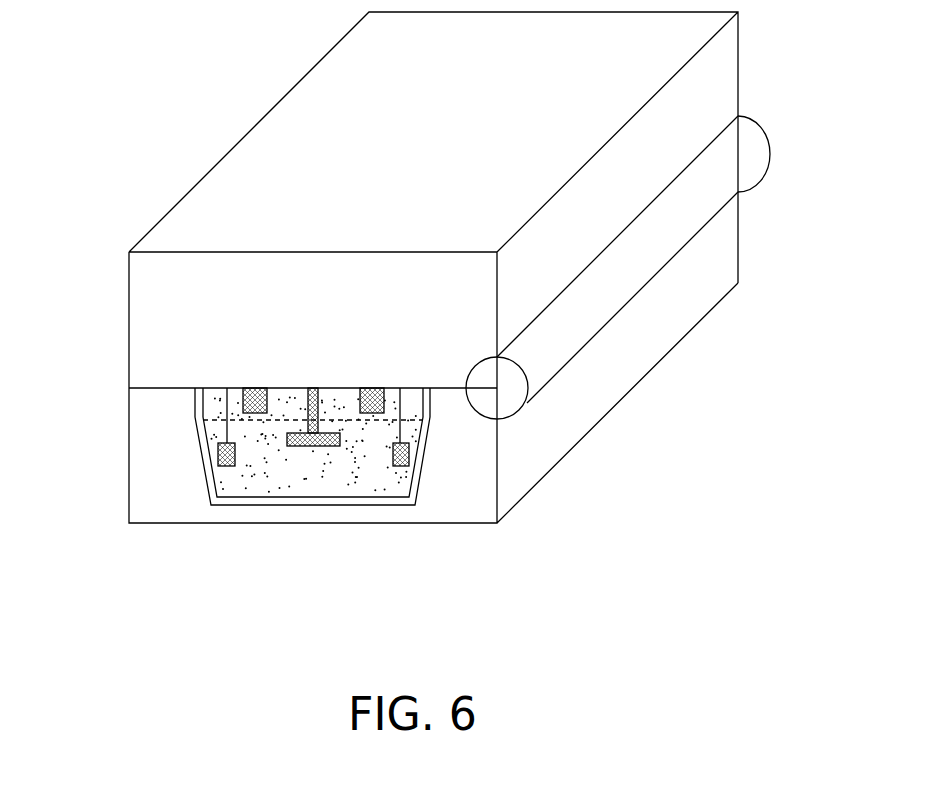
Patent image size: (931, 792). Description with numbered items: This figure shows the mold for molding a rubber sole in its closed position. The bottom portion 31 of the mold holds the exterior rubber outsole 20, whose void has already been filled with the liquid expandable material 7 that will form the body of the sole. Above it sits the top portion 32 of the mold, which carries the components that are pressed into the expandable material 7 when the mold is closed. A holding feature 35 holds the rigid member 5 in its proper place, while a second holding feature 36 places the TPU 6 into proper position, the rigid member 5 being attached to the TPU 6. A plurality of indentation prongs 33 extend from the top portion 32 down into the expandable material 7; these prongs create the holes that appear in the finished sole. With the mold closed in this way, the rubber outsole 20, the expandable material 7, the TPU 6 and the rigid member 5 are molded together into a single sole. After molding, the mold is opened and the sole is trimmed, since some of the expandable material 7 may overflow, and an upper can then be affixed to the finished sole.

The rigid member 5 is at (318, 447).
The TPU material 6 is at (218, 460).
The expandable material 7 is at (285, 487).
The rubber outsole 20 is at (412, 505).
The bottom portion 31 is at (142, 502).
The top portion 32 is at (180, 268).
The indentation prongs 33 is at (372, 387).
The holding feature 35 is at (313, 387).
The second holding feature 36 is at (225, 403).